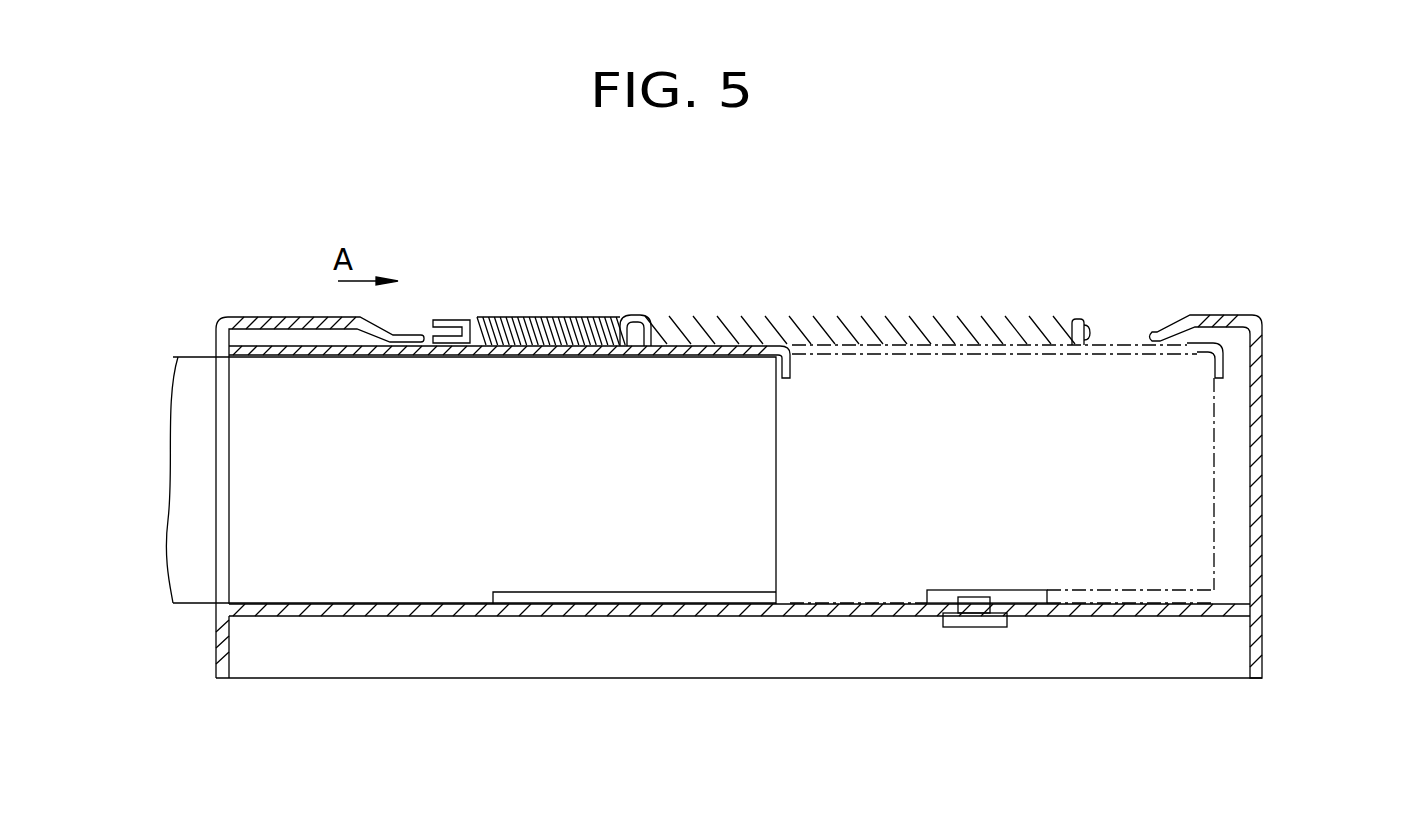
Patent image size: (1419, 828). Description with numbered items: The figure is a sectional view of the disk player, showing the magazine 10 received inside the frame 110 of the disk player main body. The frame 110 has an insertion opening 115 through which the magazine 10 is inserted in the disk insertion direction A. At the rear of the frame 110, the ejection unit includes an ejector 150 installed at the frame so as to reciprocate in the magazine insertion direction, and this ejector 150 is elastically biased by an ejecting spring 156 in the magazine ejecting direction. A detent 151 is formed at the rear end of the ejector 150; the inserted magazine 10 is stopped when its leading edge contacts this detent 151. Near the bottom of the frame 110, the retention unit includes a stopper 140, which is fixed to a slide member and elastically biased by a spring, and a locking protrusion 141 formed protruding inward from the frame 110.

The magazine 10 is at (777, 440).
The frame 110 is at (1274, 402).
The insertion opening 115 is at (218, 390).
The stopper 140 is at (987, 627).
The locking protrusion 141 is at (995, 580).
The ejector 150 is at (734, 346).
The detent 151 is at (803, 352).
The ejecting spring 156 is at (537, 316).